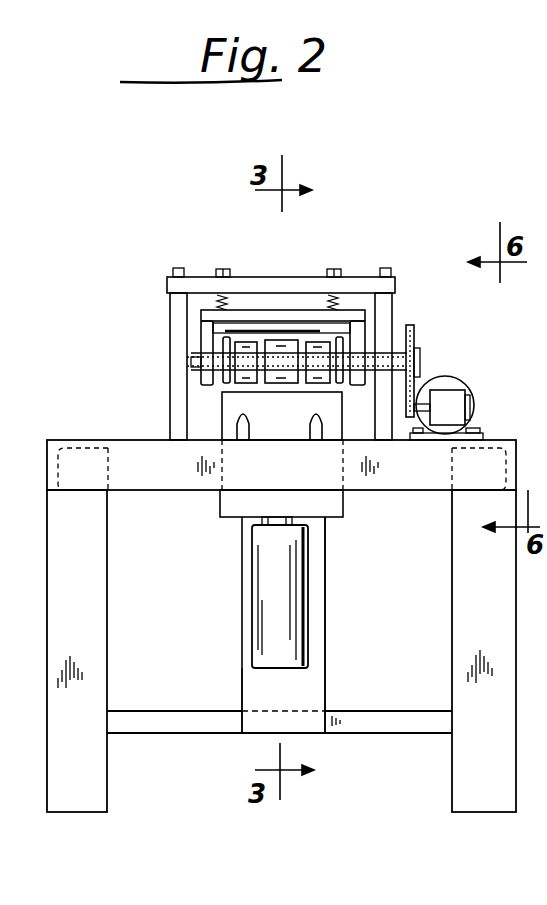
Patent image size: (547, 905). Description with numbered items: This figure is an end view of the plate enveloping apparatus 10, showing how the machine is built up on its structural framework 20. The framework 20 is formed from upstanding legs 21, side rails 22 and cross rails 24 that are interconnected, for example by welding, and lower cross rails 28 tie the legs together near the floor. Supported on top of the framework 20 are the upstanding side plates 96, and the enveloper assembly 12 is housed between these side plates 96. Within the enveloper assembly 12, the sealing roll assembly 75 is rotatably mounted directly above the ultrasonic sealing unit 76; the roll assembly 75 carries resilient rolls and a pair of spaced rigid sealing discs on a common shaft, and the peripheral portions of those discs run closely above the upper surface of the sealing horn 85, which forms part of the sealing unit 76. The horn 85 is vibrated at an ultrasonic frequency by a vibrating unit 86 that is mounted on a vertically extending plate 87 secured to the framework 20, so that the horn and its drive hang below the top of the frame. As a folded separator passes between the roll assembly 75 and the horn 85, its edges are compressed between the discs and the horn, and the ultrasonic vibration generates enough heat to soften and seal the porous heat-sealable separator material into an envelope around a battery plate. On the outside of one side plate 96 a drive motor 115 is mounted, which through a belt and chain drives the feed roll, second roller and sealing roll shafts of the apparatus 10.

The plate enveloping apparatus 10 is at (158, 265).
The enveloper assembly 12 is at (370, 262).
The structural framework 20 is at (30, 568).
The upstanding legs 21 is at (84, 620).
The side rails 22 is at (70, 448).
The cross rails 24 is at (175, 492).
The lower cross rails 28 is at (182, 724).
The sealing roll assembly 75 is at (300, 385).
The ultrasonic sealing unit 76 is at (338, 612).
The sealing horn 85 is at (343, 505).
The vibrating unit 86 is at (300, 582).
The vertically extending plate 87 is at (320, 684).
The side plates 96 is at (170, 328).
The drive motor 115 is at (457, 382).